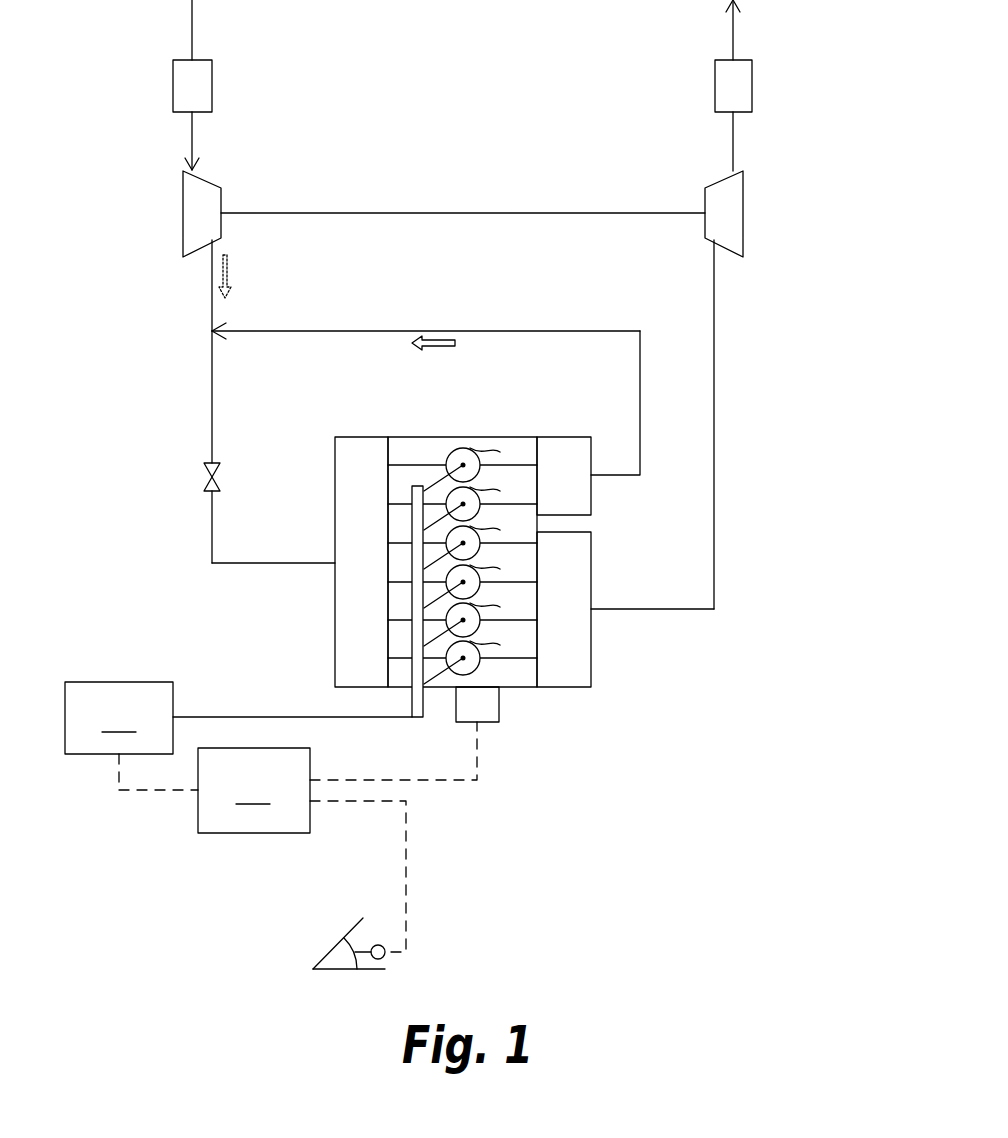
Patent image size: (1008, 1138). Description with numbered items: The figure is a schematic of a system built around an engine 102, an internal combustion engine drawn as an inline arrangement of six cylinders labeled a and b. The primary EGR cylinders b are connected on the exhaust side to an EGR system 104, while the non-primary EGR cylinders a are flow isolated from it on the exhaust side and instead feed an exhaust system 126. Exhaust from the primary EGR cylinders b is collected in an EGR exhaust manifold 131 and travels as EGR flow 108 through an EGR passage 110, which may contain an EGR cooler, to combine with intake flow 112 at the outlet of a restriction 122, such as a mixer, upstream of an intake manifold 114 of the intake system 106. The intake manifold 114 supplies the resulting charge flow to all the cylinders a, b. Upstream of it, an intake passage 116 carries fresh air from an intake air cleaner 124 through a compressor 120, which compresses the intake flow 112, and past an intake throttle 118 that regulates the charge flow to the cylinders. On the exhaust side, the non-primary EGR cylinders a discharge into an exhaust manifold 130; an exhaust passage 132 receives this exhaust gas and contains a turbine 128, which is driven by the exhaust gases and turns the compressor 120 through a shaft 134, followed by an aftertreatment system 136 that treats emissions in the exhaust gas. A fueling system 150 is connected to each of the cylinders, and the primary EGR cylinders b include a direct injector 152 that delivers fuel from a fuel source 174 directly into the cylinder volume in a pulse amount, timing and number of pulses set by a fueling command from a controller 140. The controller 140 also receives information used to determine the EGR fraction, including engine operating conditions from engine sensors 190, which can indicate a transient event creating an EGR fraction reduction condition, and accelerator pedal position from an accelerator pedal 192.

The engine 102 is at (448, 533).
The EGR system 104 is at (462, 318).
The intake system 106 is at (306, 600).
The EGR flow 108 is at (434, 351).
The EGR passage 110 is at (344, 330).
The intake flow 112 is at (256, 270).
The intake manifold 114 is at (353, 660).
The intake passage 116 is at (210, 384).
The intake throttle 118 is at (205, 482).
The compressor 120 is at (222, 176).
The restriction 122 is at (210, 330).
The intake air cleaner 124 is at (213, 80).
The exhaust system 126 is at (768, 405).
The turbine 128 is at (705, 178).
The exhaust manifold 130 is at (578, 657).
The EGR exhaust manifold 131 is at (578, 493).
The exhaust passage 132 is at (716, 543).
The shaft 134 is at (434, 213).
The aftertreatment system 136 is at (715, 80).
The controller 140 is at (254, 790).
The fueling system 150 is at (198, 656).
The direct injector 152 is at (452, 449).
The fuel source 174 is at (238, 718).
The engine sensors 190 is at (500, 705).
The accelerator pedal 192 is at (322, 957).